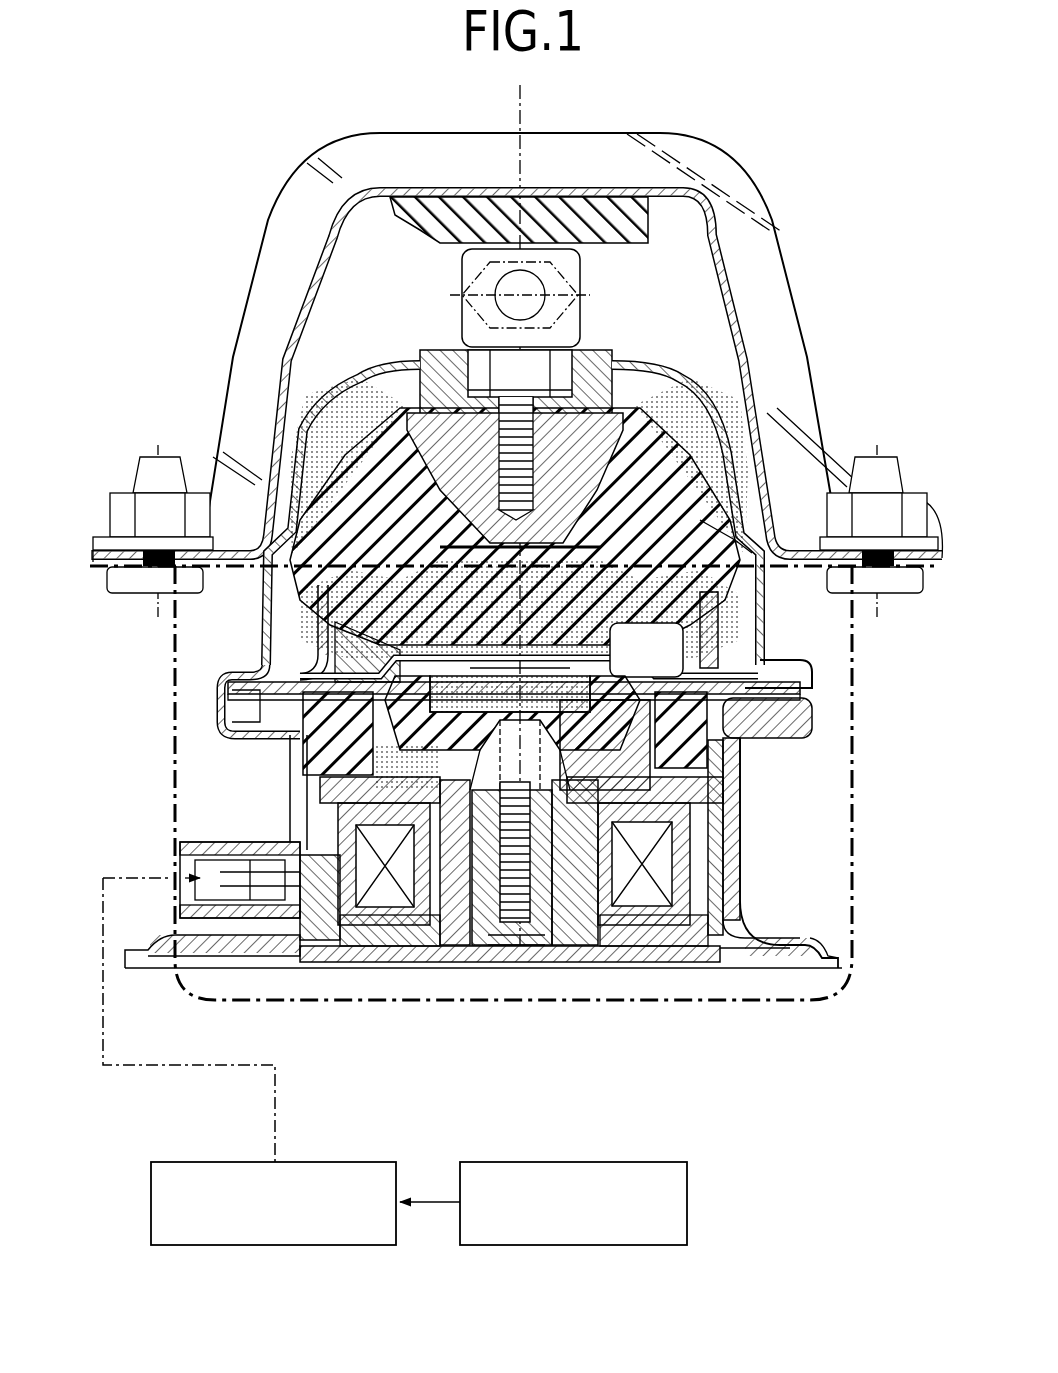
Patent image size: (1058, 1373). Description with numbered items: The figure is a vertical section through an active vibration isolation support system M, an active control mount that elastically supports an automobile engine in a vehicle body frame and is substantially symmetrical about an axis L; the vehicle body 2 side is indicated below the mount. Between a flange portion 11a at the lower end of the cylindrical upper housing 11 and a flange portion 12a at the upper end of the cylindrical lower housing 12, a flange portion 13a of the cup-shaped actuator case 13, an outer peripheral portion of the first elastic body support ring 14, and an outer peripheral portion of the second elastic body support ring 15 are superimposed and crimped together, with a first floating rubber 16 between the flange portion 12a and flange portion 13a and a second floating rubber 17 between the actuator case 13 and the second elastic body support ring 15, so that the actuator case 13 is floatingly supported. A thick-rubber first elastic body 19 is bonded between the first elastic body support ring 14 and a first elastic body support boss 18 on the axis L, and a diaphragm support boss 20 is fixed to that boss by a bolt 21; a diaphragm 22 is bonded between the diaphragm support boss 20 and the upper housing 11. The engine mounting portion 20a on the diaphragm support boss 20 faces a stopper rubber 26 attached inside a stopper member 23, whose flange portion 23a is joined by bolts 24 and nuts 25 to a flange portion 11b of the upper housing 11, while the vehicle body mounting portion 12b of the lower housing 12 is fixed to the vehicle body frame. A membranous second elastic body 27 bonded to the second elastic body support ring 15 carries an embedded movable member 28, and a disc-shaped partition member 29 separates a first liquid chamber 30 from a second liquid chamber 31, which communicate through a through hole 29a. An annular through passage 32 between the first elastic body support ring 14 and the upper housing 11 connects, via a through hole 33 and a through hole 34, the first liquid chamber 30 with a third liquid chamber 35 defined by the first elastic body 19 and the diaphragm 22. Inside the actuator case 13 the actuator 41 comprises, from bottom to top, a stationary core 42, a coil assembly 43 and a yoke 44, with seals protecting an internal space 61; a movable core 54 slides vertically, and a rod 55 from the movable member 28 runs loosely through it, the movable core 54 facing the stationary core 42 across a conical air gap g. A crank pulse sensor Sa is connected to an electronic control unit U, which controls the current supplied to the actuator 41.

The axis L is at (522, 102).
The active vibration isolation support system M is at (815, 305).
The vehicle body 2 is at (802, 1012).
The upper housing 11 is at (255, 630).
The flange portion 11a is at (225, 698).
The flange portion 11b is at (112, 560).
The lower housing 12 is at (748, 836).
The flange portion 12a is at (775, 725).
The vehicle body mounting portion 12b is at (780, 940).
The actuator case 13 is at (725, 872).
The flange portion 13a is at (805, 692).
The first elastic body support ring 14 is at (348, 632).
The second elastic body support ring 15 is at (347, 682).
The first floating rubber 16 is at (232, 722).
The second floating rubber 17 is at (330, 730).
The first elastic body support boss 18 is at (481, 489).
The first elastic body 19 is at (645, 462).
The diaphragm support boss 20 is at (607, 345).
The engine mounting portion 20a is at (582, 272).
The bolt 21 is at (483, 348).
The diaphragm 22 is at (368, 370).
The stopper member 23 is at (303, 292).
The flange portion 23a is at (96, 545).
The bolts 24 is at (160, 590).
The nuts 25 is at (175, 458).
The stopper rubber 26 is at (442, 236).
The second elastic body 27 is at (592, 702).
The movable member 28 is at (512, 710).
The partition member 29 is at (480, 655).
The through hole 29a is at (495, 656).
The first liquid chamber 30 is at (607, 615).
The second liquid chamber 31 is at (422, 703).
The through passage 32 is at (298, 606).
The through hole 33 is at (697, 652).
The through hole 34 is at (728, 530).
The third liquid chamber 35 is at (356, 465).
The actuator 41 is at (268, 803).
The stationary core 42 is at (572, 960).
The coil assembly 43 is at (675, 960).
The yoke 44 is at (681, 730).
The movable core 54 is at (420, 840).
The rod 55 is at (520, 730).
The internal space 61 is at (618, 682).
The air gap g is at (495, 960).
The electronic control unit U is at (170, 1162).
The crank pulse sensor Sa is at (660, 1162).